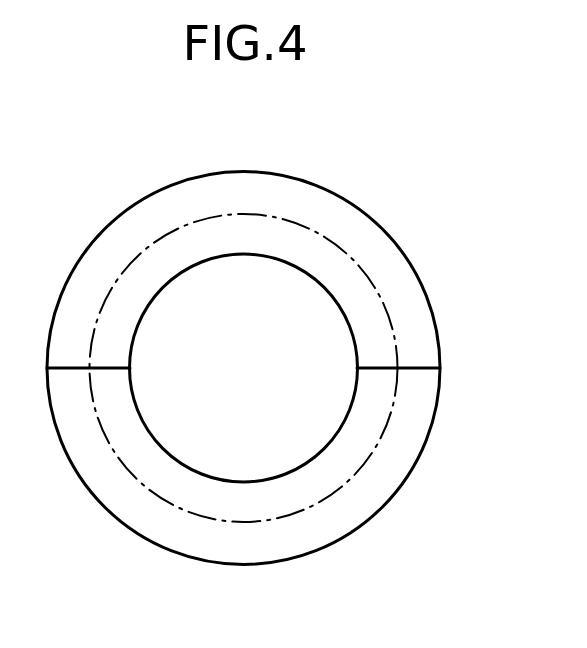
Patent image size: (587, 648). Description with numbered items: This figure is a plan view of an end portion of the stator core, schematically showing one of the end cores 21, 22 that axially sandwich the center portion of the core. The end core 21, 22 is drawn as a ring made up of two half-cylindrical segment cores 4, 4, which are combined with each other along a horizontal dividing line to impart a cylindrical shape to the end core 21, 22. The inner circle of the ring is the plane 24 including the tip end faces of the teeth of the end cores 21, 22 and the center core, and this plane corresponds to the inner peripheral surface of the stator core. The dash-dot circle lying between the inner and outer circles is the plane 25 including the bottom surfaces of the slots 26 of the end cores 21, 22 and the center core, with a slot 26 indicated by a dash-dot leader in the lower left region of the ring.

The half-cylindrical segment core 4 is at (423, 313).
The end core 21 is at (272, 369).
The end core 22 is at (413, 222).
The plane including tip end faces of the teeth 24 is at (147, 312).
The plane including the bottom surfaces of slots 25 is at (216, 369).
The slot 26 is at (157, 472).